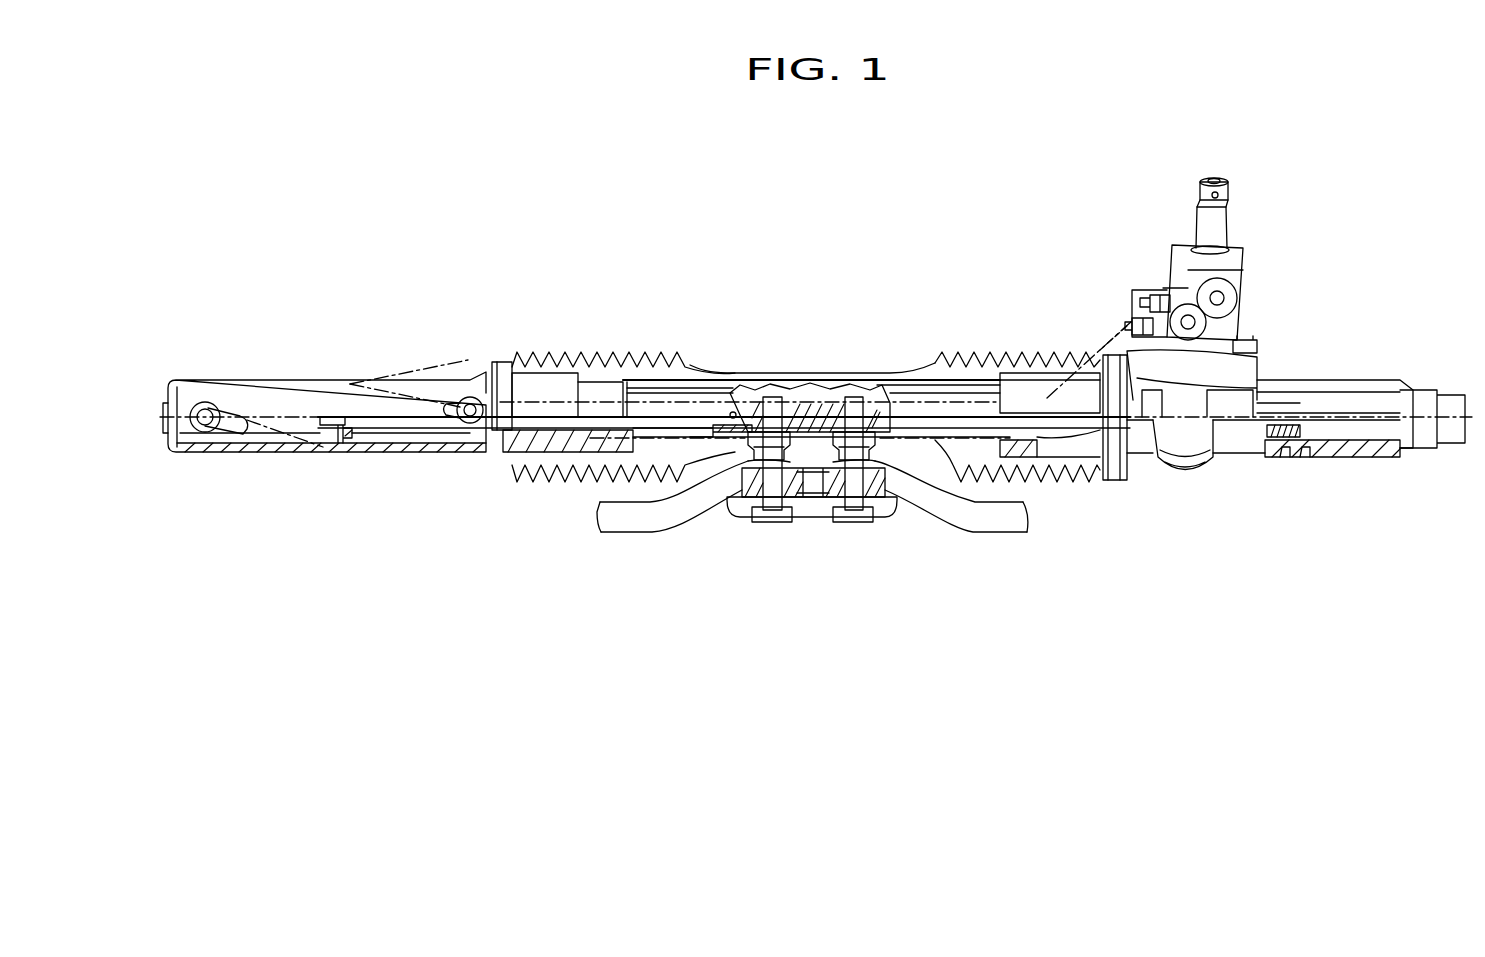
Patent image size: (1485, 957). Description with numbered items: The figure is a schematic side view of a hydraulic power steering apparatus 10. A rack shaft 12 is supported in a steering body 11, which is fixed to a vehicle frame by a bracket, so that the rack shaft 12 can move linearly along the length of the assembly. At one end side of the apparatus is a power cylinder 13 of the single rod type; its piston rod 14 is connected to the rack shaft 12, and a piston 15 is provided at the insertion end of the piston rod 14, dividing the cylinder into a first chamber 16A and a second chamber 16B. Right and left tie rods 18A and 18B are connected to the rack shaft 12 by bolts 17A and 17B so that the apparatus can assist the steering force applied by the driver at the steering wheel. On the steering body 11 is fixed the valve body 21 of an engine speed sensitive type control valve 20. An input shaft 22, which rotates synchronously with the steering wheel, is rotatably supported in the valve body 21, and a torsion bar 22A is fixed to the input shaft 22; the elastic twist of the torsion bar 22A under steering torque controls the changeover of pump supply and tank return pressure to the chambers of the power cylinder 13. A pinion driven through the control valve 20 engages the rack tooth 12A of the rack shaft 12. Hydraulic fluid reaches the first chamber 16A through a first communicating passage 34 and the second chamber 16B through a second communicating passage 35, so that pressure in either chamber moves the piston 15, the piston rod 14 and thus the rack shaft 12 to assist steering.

The hydraulic power steering apparatus 10 is at (470, 272).
The steering body 11 is at (1078, 440).
The rack shaft 12 is at (957, 444).
The rack tooth 12A is at (1278, 430).
The power cylinder 13 is at (287, 448).
The piston rod 14 is at (421, 430).
The piston 15 is at (358, 438).
The first chamber 16A is at (379, 437).
The second chamber 16B is at (247, 443).
The bolt 17A is at (853, 520).
The bolt 17B is at (772, 518).
The tie rod 18A is at (1002, 528).
The tie rod 18B is at (642, 525).
The control valve 20 is at (1248, 258).
The valve body 21 is at (1255, 272).
The input shaft 22 is at (1233, 192).
The torsion bar 22A is at (1218, 179).
The first communicating passage 34 is at (458, 405).
The second communicating passage 35 is at (230, 412).